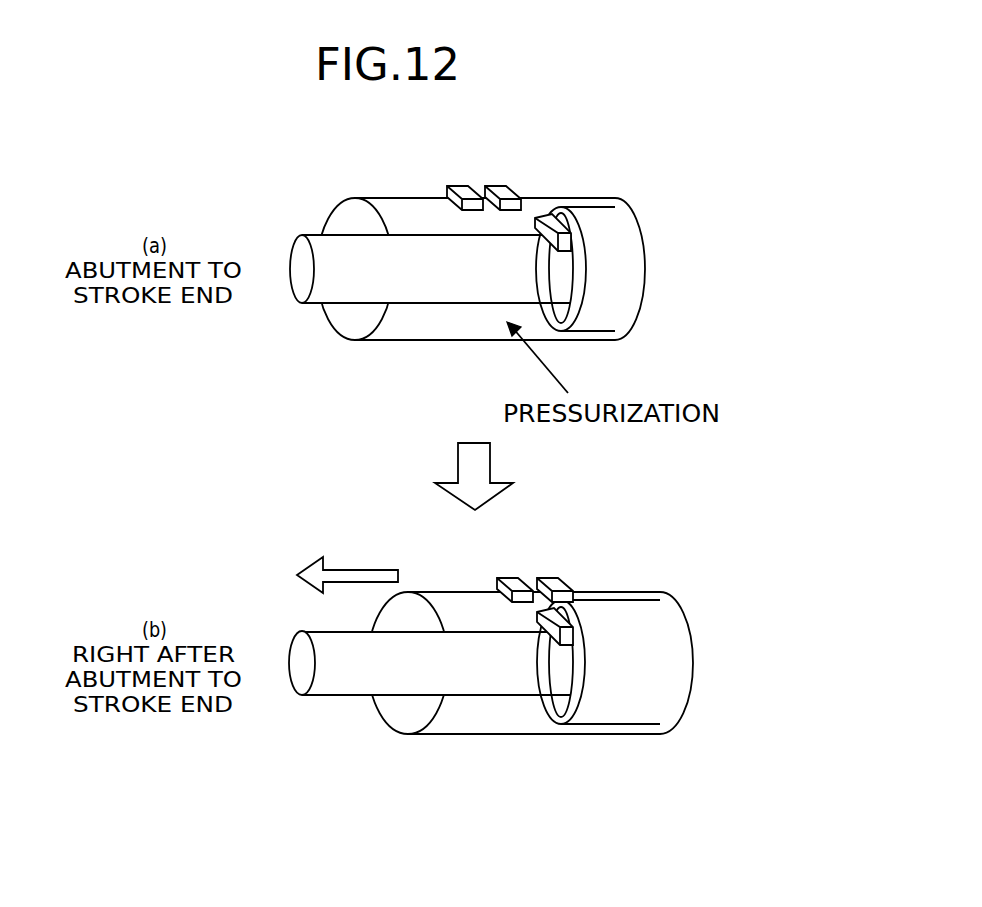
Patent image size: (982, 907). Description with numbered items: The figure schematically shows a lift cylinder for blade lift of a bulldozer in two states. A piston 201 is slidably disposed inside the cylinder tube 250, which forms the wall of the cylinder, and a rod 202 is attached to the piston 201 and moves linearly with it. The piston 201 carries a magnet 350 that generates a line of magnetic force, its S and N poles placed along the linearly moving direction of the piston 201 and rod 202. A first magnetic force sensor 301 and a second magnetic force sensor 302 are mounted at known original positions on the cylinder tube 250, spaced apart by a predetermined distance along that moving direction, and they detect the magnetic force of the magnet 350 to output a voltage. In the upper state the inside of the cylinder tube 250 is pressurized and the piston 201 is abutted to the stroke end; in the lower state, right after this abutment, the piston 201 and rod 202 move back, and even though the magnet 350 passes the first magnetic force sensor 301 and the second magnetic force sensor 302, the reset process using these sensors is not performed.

The cylinder tube 250 is at (392, 197).
The piston 201 is at (602, 227).
The rod 202 is at (303, 240).
The first magnetic force sensor 301 is at (460, 185).
The second magnetic force sensor 302 is at (502, 185).
The magnet 350 is at (545, 244).